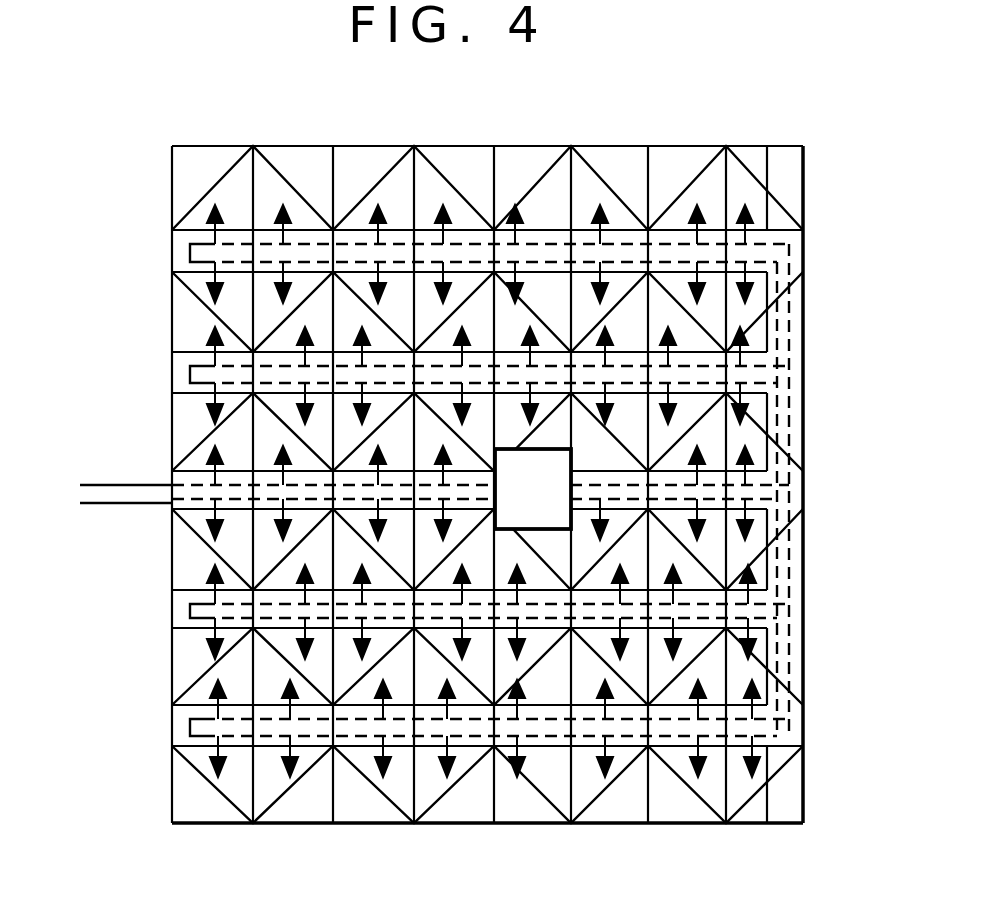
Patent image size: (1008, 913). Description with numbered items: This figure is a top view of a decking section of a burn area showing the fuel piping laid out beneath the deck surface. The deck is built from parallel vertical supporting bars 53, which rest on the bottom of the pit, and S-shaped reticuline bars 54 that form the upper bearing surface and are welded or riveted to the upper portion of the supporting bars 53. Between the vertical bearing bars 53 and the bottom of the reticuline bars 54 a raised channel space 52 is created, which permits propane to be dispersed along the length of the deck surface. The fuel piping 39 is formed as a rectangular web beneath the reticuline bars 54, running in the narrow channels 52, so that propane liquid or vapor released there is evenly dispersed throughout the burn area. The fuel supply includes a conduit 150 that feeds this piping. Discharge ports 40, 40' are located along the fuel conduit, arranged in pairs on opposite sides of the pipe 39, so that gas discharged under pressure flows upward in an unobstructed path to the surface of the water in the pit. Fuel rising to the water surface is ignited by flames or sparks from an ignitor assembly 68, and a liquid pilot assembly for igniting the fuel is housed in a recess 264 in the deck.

The S-shaped reticuline bar 54 is at (689, 180).
The vertical supporting bar 53 is at (727, 823).
The raised channel space 52 is at (533, 813).
The fuel piping 39 is at (790, 548).
The discharge port 40 is at (435, 702).
The discharge port 40' is at (425, 771).
The recess 264 is at (596, 450).
The conduit 150 is at (108, 484).
The ignitor assembly 68 is at (543, 462).